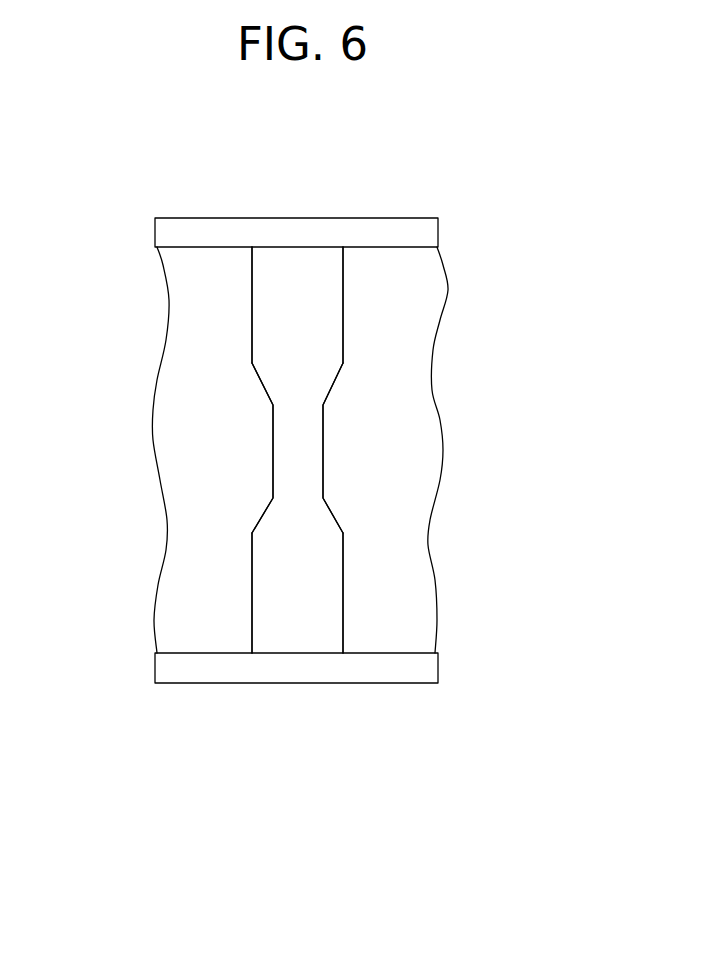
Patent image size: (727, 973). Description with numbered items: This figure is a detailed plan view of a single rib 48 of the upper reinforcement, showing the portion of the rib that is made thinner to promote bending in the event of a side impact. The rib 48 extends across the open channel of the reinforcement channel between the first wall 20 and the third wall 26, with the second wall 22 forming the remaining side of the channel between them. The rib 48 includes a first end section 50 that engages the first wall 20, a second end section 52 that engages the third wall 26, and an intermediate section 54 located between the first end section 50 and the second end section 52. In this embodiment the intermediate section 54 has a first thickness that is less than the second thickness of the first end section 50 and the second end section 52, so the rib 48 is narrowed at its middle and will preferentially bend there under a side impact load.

The first wall 20 is at (265, 673).
The second wall 22 is at (405, 453).
The third wall 26 is at (371, 232).
The rib 48 is at (375, 342).
The first end section 50 is at (318, 597).
The second end section 52 is at (278, 330).
The intermediate section 54 is at (288, 444).